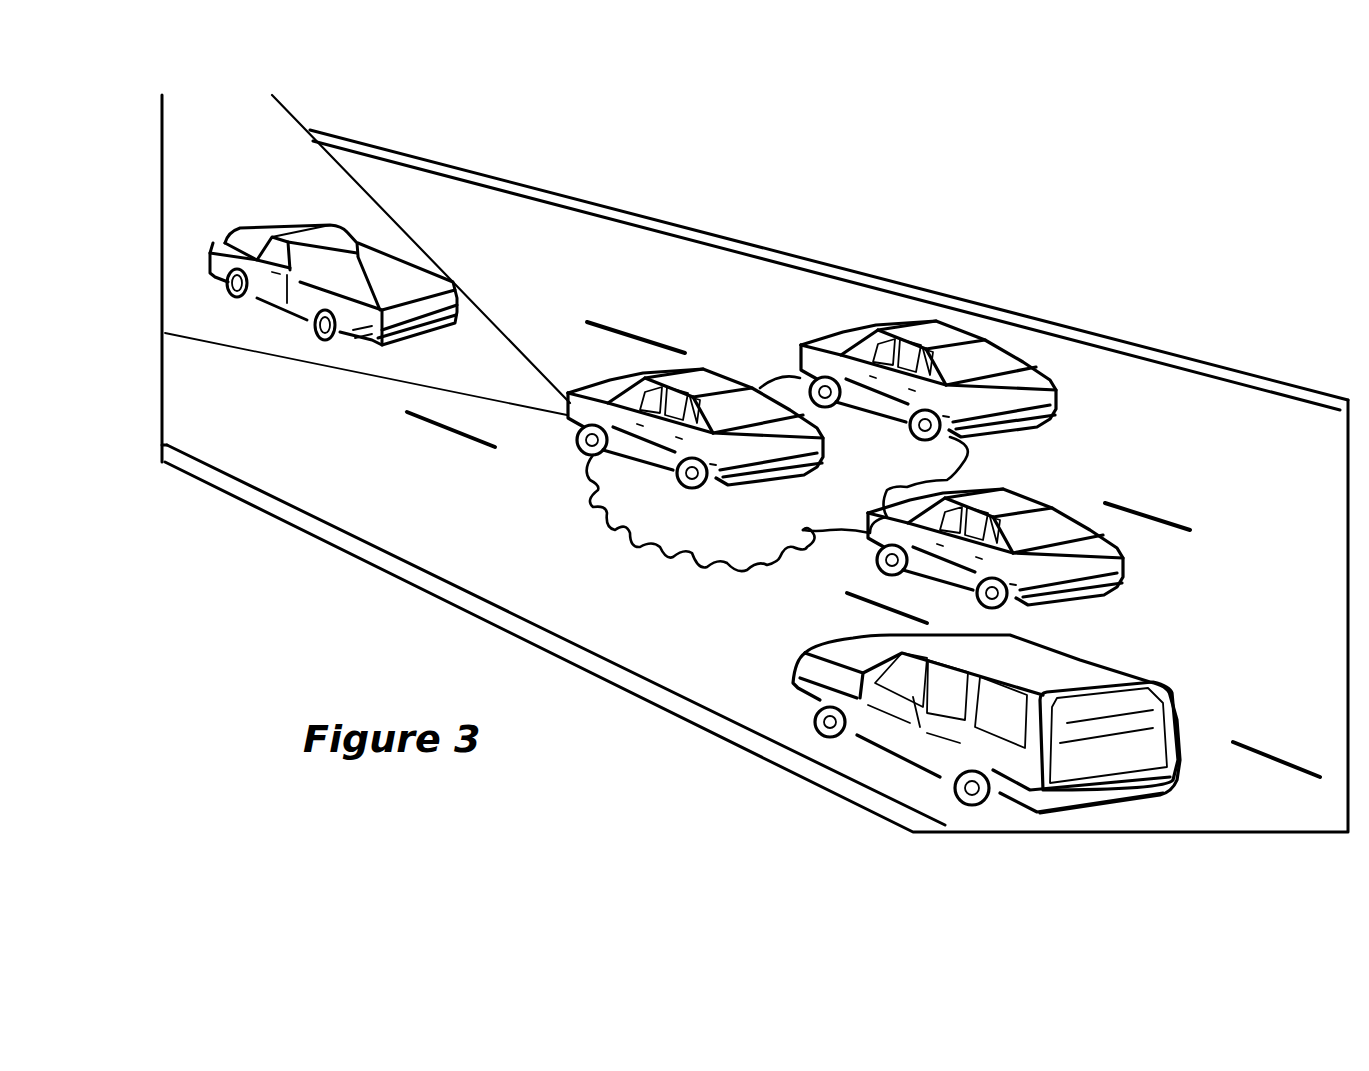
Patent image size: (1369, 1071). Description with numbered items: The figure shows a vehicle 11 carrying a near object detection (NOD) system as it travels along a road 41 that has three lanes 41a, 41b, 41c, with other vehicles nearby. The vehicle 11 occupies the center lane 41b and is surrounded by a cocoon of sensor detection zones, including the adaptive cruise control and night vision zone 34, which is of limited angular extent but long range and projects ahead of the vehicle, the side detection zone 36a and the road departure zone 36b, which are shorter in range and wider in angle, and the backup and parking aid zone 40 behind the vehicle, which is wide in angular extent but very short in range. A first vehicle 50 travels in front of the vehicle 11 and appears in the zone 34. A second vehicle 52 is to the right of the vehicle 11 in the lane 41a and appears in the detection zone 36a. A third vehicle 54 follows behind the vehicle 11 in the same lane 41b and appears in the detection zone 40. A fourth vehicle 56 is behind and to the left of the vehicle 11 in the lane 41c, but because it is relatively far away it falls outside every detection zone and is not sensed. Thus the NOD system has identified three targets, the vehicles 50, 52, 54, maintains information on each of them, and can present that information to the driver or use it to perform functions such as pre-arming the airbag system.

The vehicle 11 is at (714, 372).
The adaptive cruise control and night vision zone 34 is at (492, 328).
The detection zone 36a is at (885, 452).
The road departure zone 36b is at (745, 540).
The backup and parking aid zone 40 is at (860, 518).
The road 41 is at (608, 205).
The lane 41a is at (656, 285).
The lane 41b is at (600, 367).
The lane 41c is at (425, 495).
The first vehicle 50 is at (348, 235).
The second vehicle 52 is at (937, 322).
The third vehicle 54 is at (1012, 503).
The fourth vehicle 56 is at (1075, 668).